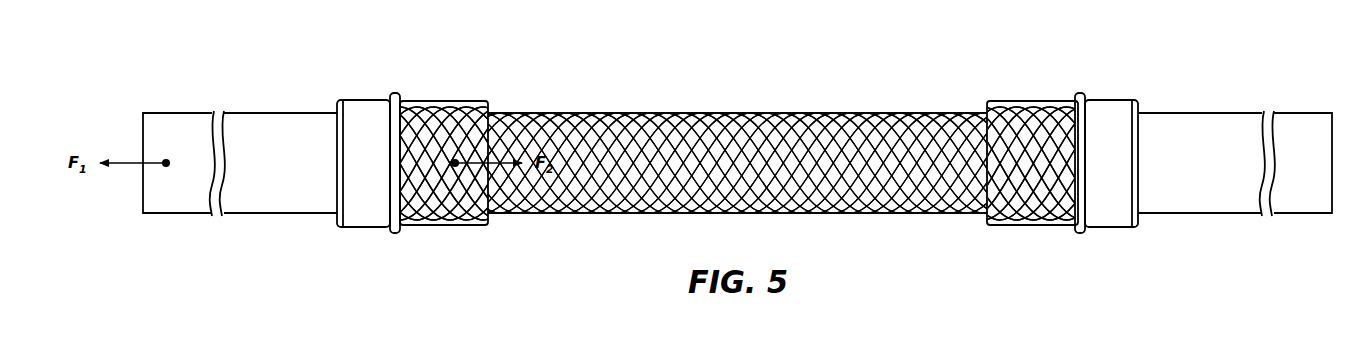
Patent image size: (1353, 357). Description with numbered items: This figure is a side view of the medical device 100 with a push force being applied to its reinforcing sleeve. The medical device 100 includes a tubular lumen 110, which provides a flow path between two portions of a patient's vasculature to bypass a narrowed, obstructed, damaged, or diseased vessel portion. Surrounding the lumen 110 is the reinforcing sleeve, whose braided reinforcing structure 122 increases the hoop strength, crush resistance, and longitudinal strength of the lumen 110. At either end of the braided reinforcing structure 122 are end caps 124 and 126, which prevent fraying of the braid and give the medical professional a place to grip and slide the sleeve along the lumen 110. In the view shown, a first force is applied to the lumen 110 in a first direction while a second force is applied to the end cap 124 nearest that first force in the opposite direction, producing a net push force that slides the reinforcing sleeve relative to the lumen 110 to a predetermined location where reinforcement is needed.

The medical device 100 is at (518, 74).
The lumen 110 is at (253, 112).
The reinforcing structure 122 is at (727, 112).
The end cap 124 is at (368, 100).
The end cap 126 is at (1110, 99).